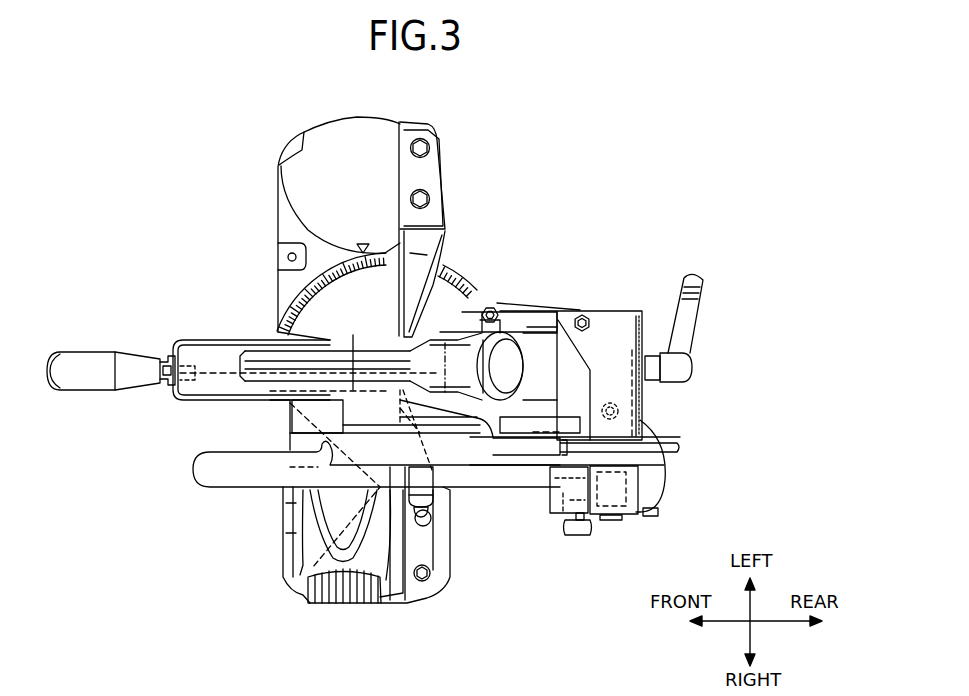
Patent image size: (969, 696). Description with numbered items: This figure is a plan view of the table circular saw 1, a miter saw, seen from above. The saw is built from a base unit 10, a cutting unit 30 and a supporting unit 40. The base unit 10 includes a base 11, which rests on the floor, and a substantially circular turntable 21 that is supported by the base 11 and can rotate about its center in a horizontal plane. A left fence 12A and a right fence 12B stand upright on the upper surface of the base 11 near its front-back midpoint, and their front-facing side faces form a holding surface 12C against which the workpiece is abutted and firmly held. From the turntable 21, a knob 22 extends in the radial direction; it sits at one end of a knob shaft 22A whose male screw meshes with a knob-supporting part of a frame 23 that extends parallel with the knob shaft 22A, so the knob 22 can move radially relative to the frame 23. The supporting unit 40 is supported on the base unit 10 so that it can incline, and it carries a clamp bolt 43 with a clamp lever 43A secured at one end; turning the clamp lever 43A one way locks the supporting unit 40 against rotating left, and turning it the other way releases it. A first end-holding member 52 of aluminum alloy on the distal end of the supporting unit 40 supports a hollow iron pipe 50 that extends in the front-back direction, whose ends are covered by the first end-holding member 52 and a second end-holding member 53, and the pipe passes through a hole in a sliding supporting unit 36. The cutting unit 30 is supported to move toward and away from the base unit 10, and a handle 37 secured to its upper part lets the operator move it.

The table circular saw 1 is at (579, 132).
The base unit 10 is at (447, 588).
The base 11 is at (390, 600).
The left fence 12A is at (400, 178).
The right fence 12B is at (404, 545).
The holding surface 12C is at (390, 149).
The turntable 21 is at (445, 297).
The knob 22 is at (84, 350).
The knob shaft 22A is at (166, 390).
The frame 23 is at (176, 341).
The cutting unit 30 is at (463, 352).
The sliding supporting unit 36 is at (563, 502).
The handle 37 is at (226, 488).
The supporting unit 40 is at (651, 398).
The clamp bolt 43 is at (700, 367).
The clamp lever 43A is at (696, 276).
The pipe 50 is at (497, 495).
The first end-holding member 52 is at (628, 512).
The second end-holding member 53 is at (432, 503).